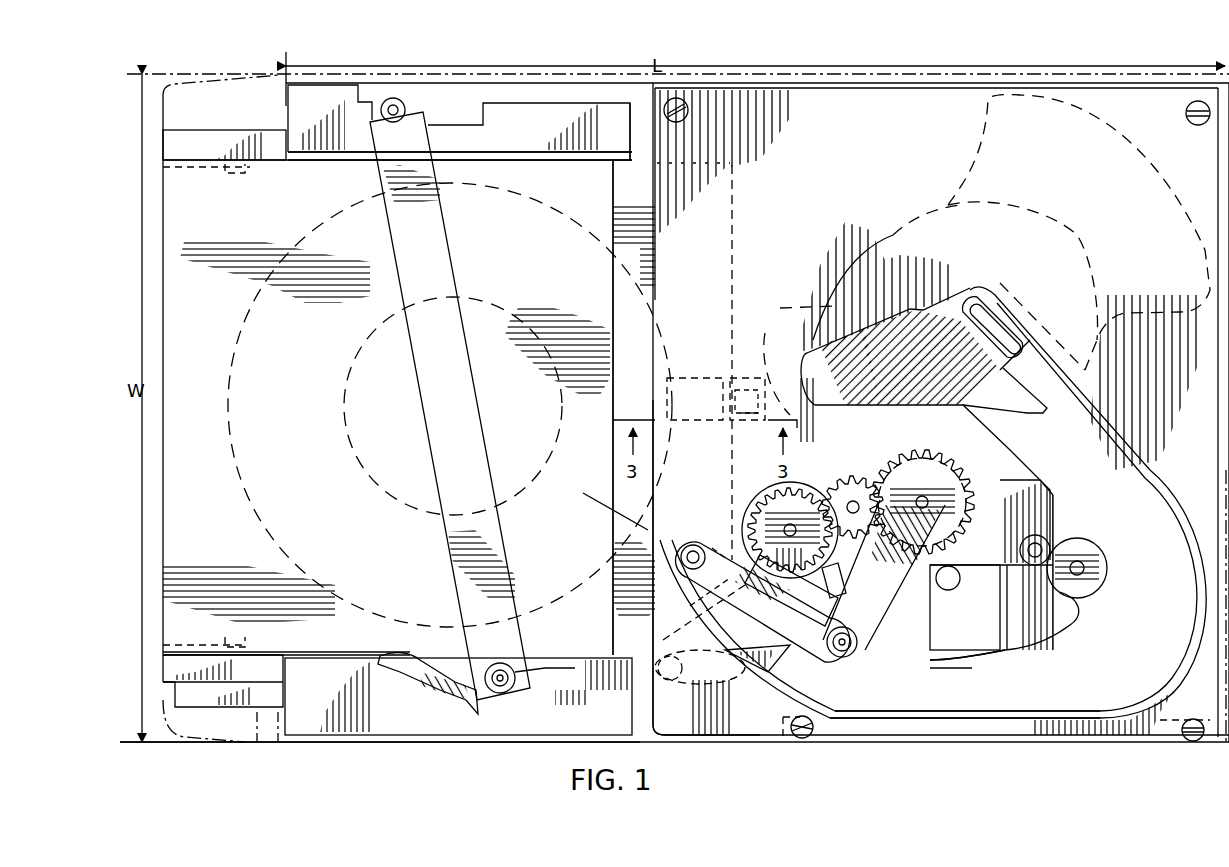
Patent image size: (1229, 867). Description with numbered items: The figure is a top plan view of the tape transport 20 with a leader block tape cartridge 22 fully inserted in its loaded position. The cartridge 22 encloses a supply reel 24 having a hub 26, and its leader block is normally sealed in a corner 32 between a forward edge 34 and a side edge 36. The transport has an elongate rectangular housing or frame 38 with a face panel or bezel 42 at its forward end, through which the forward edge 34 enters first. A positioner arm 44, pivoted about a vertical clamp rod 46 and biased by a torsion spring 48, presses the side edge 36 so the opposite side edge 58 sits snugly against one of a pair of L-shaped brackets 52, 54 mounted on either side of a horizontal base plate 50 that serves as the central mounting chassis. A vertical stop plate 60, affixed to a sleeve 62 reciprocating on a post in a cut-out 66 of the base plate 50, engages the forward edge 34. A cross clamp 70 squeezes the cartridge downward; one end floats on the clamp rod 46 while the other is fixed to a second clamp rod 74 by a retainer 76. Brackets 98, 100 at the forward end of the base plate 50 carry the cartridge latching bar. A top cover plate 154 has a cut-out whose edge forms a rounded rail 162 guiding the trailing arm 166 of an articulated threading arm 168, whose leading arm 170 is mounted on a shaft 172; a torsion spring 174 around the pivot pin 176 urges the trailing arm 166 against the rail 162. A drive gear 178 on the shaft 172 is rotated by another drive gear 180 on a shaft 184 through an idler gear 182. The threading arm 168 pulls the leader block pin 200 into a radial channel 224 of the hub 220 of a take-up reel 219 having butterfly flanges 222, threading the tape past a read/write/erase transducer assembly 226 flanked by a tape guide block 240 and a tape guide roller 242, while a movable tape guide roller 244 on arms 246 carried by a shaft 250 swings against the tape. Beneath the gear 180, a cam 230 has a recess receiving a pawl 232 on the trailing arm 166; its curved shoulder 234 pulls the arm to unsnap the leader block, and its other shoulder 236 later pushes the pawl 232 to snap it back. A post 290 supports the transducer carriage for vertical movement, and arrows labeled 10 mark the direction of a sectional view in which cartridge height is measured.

The tape cassette 10 is at (590, 502).
The tape transport 20 is at (420, 750).
The leader block tape cartridge 22 is at (633, 168).
The supply reel 24 is at (240, 333).
The hub 26 is at (340, 400).
The corner of the cartridge 32 is at (692, 598).
The forward edge 34 is at (745, 262).
The side edge 36 is at (318, 652).
The housing or frame 38 is at (513, 745).
The face panel or bezel 42 is at (242, 742).
The positioner arm 44 is at (445, 690).
The clamp rod 46 is at (510, 692).
The torsion spring 48 is at (535, 670).
The base plate 50 is at (642, 722).
The L-shaped bracket 52 is at (362, 700).
The L-shaped bracket 54 is at (550, 155).
The opposite side edge 58 is at (495, 160).
The stop plate 60 is at (740, 378).
The sleeve 62 is at (745, 420).
The cut-out 66 is at (692, 378).
The cross clamp 70 is at (440, 272).
The second clamp rod 74 is at (405, 108).
The retainer 76 is at (384, 108).
The bracket 98 is at (213, 136).
The bracket 100 is at (240, 700).
The top cover plate 154 is at (1148, 737).
The rounded rail 162 is at (1022, 715).
The trailing arm 166 is at (810, 627).
The articulated threading arm 168 is at (870, 656).
The leading arm 170 is at (948, 585).
The shaft 172 is at (950, 475).
The torsion spring 174 is at (977, 566).
The pivot pin 176 is at (842, 660).
The drive gear 178 is at (920, 496).
The drive gear 180 is at (740, 505).
The idler gear 182 is at (853, 480).
The shaft 184 is at (792, 526).
The leader block pin 200 is at (683, 552).
The take-up reel 219 is at (905, 215).
The hub 220 is at (1075, 238).
The butterfly flanges 222 is at (1133, 140).
The channel 224 is at (1035, 397).
The transducer assembly 226 is at (1003, 648).
The cam 230 is at (790, 562).
The pawl 232 is at (704, 612).
The curved shoulder 234 is at (722, 540).
The other shoulder 236 is at (846, 580).
The tape guide block 240 is at (1063, 617).
The tape guide roller 242 is at (1088, 546).
The movable tape guide roller 244 is at (770, 688).
The arms 246 is at (700, 682).
The shaft 250 is at (700, 655).
The post 290 is at (955, 582).